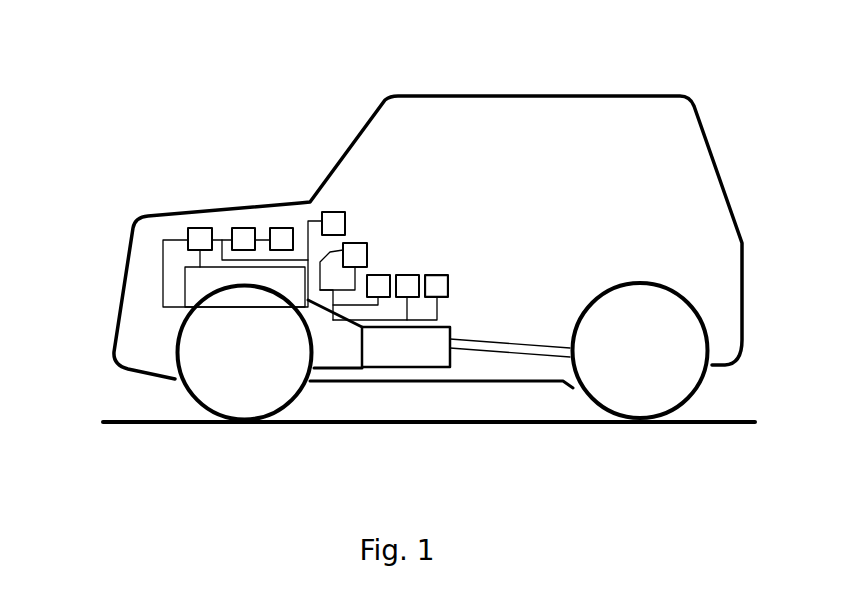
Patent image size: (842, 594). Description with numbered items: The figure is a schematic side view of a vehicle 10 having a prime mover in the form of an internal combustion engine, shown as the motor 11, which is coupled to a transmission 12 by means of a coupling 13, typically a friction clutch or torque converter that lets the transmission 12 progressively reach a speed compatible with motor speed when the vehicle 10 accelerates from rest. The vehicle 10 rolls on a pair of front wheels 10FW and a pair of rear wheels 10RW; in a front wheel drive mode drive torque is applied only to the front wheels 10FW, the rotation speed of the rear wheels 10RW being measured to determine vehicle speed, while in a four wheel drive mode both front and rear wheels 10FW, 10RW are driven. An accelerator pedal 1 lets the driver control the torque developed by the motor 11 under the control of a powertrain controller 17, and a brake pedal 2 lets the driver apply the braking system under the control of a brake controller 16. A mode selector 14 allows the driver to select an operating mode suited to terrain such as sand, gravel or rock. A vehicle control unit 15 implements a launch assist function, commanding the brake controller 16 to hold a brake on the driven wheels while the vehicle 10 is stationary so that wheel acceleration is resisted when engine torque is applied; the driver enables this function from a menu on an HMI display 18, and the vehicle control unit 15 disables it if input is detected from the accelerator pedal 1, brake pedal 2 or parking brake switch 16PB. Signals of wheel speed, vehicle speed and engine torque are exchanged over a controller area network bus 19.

The accelerator pedal 1 is at (410, 275).
The brake pedal 2 is at (383, 275).
The vehicle 10 is at (323, 151).
The front wheels 10FW is at (218, 393).
The rear wheels 10RW is at (667, 392).
The motor 11 is at (197, 279).
The transmission 12 is at (417, 357).
The coupling 13 is at (330, 357).
The mode selector 14 is at (440, 275).
The vehicle control unit 15 is at (280, 230).
The brake controller 16 is at (245, 230).
The powertrain controller 17 is at (207, 230).
The HMI display 18 is at (345, 221).
The controller area network bus 19 is at (367, 252).
The parking brake switch 16PB is at (447, 275).